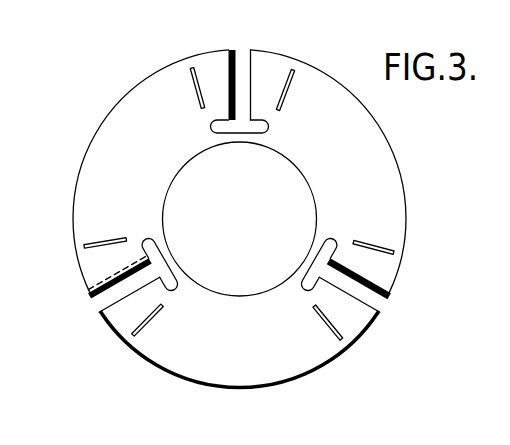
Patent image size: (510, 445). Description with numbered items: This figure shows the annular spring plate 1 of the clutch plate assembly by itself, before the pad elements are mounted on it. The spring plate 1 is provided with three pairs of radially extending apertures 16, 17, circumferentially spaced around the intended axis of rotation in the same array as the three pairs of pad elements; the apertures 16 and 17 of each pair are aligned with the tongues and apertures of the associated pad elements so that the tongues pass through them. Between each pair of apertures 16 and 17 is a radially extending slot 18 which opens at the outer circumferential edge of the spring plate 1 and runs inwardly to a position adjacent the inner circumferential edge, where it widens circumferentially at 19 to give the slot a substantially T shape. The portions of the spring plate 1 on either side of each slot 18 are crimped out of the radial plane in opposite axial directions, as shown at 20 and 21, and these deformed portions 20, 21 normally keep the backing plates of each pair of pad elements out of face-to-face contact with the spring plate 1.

The spring plate 1 is at (190, 372).
The aperture 16 is at (190, 74).
The aperture 17 is at (295, 78).
The slot 18 is at (236, 50).
The widened portion of slot 19 is at (270, 128).
The deformed portion 20 is at (218, 57).
The deformed portion 21 is at (267, 63).